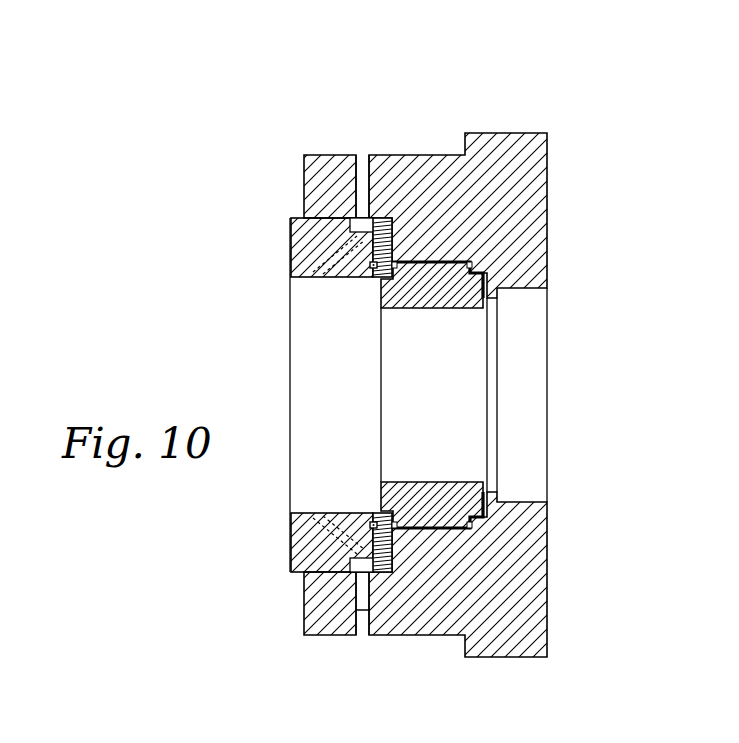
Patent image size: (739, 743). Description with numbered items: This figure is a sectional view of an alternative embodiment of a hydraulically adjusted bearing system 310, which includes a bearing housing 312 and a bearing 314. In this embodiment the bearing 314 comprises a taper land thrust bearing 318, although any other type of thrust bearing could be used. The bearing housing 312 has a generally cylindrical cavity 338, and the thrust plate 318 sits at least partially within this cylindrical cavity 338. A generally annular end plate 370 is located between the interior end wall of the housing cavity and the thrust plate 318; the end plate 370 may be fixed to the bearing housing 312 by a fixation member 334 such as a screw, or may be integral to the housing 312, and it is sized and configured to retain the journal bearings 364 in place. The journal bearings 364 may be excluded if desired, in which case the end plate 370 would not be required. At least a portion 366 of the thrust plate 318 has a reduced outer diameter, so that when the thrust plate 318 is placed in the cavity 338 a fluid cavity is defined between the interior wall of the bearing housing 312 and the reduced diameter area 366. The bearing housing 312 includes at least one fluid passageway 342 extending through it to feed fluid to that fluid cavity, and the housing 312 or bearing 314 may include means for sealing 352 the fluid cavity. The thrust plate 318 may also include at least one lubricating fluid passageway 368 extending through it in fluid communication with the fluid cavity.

The hydraulically adjusted bearing system 310 is at (200, 374).
The bearing housing 312 is at (487, 157).
The bearing 314 is at (286, 247).
The taper land thrust bearing 318 is at (289, 231).
The threaded fastener 334 is at (377, 218).
The cylindrical cavity 338 is at (360, 222).
The fluid passageway 342 is at (363, 170).
The means for sealing 352 is at (372, 277).
The journal bearing 364 is at (458, 482).
The reduced diameter area 366 is at (372, 270).
The lubricating fluid passageway 368 is at (320, 547).
The end plate 370 is at (382, 246).